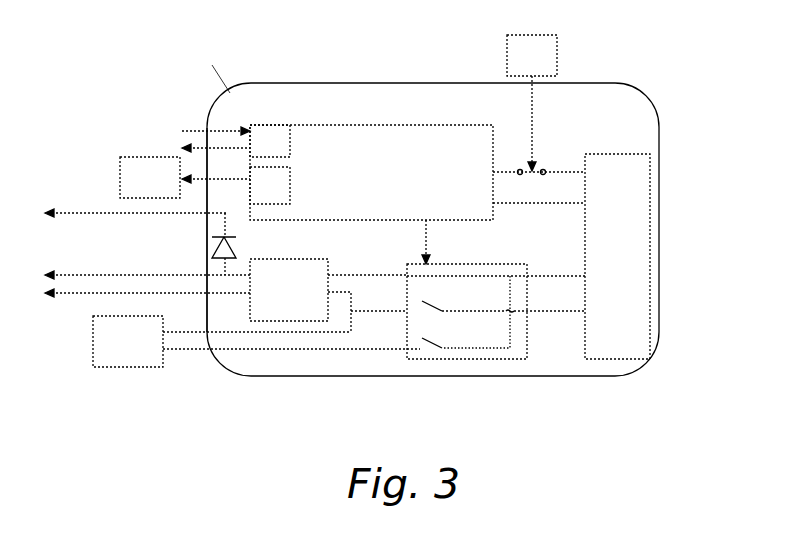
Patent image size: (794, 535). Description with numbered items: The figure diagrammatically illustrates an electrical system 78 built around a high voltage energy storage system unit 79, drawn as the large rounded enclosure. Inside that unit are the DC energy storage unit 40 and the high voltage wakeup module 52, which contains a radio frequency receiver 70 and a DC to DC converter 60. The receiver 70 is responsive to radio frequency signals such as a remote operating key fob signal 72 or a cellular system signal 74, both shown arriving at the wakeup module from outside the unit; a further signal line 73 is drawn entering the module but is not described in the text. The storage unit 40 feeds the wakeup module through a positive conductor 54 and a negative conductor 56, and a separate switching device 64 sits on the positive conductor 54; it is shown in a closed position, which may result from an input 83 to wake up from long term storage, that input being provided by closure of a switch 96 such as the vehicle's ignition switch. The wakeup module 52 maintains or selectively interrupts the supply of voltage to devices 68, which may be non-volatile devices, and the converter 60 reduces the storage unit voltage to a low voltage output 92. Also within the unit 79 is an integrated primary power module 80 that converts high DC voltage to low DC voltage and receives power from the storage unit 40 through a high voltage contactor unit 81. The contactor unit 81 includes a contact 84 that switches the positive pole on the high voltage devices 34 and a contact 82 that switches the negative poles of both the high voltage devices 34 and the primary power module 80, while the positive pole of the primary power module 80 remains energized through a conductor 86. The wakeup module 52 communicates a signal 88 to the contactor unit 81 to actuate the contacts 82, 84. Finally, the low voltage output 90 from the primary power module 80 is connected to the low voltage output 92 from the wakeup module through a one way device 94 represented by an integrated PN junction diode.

The electrical system 78 is at (478, 199).
The high voltage energy storage system unit 79 is at (650, 86).
The remote operating key fob signal 72 is at (207, 130).
The high voltage wakeup module 52 is at (371, 172).
The radio frequency receiver 70 is at (284, 152).
The DC to DC converter 60 is at (284, 198).
The cellular system signal 74 is at (245, 118).
The input signal line 73 is at (200, 133).
The devices 68 is at (164, 189).
The low voltage output 92 is at (240, 213).
The one way device 94 is at (212, 238).
The low voltage output 90 is at (106, 275).
The integrated primary power module 80 is at (302, 303).
The high voltage devices 34 is at (142, 353).
The signal 88 is at (425, 238).
The contact 82 is at (499, 330).
The high voltage contactor unit 81 is at (524, 358).
The contact 84 is at (423, 340).
The conductor 86 is at (468, 275).
The DC energy storage unit 40 is at (632, 303).
The positive conductor 54 is at (552, 173).
The negative conductor 56 is at (535, 203).
The switching device 64 is at (541, 168).
The switch 96 is at (546, 66).
The input 83 is at (532, 110).